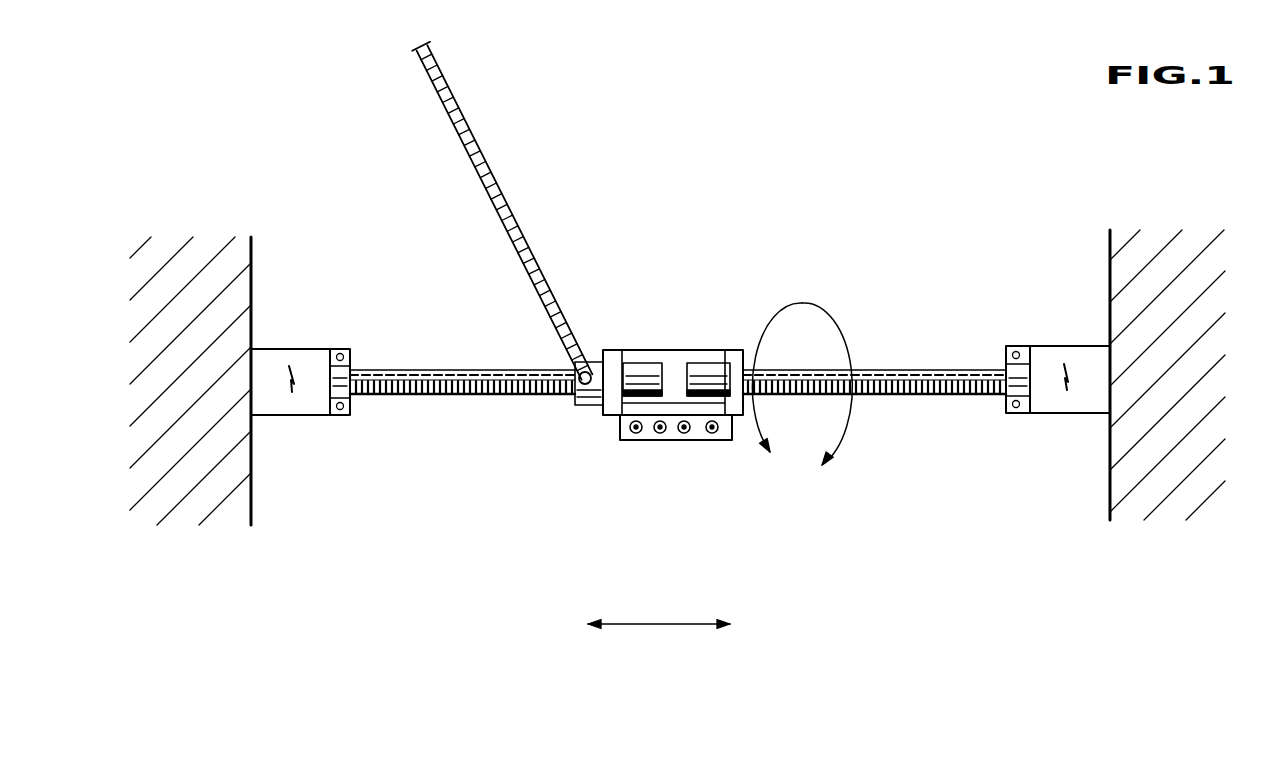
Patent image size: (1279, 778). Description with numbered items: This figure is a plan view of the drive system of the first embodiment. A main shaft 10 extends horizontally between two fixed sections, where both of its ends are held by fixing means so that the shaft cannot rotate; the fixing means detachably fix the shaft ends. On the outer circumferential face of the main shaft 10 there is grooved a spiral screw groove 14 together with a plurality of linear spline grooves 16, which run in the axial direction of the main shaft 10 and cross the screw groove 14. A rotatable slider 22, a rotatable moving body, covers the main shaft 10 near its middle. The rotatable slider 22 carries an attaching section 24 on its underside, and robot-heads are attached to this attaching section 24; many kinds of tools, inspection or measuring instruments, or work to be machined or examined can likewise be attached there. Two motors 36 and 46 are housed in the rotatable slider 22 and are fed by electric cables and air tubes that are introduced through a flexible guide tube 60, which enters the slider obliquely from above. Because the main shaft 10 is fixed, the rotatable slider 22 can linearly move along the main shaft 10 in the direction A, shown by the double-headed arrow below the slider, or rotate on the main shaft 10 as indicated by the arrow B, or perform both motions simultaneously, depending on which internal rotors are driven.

The main shaft 10 is at (927, 367).
The screw groove 14 is at (440, 395).
The spline grooves 16 is at (462, 373).
The rotatable slider 22 is at (697, 297).
The attaching section 24 is at (622, 437).
The motor 36 is at (637, 368).
The motor 46 is at (712, 368).
The flexible guide tube 60 is at (482, 155).
The direction A is at (670, 625).
The arrow B is at (825, 303).